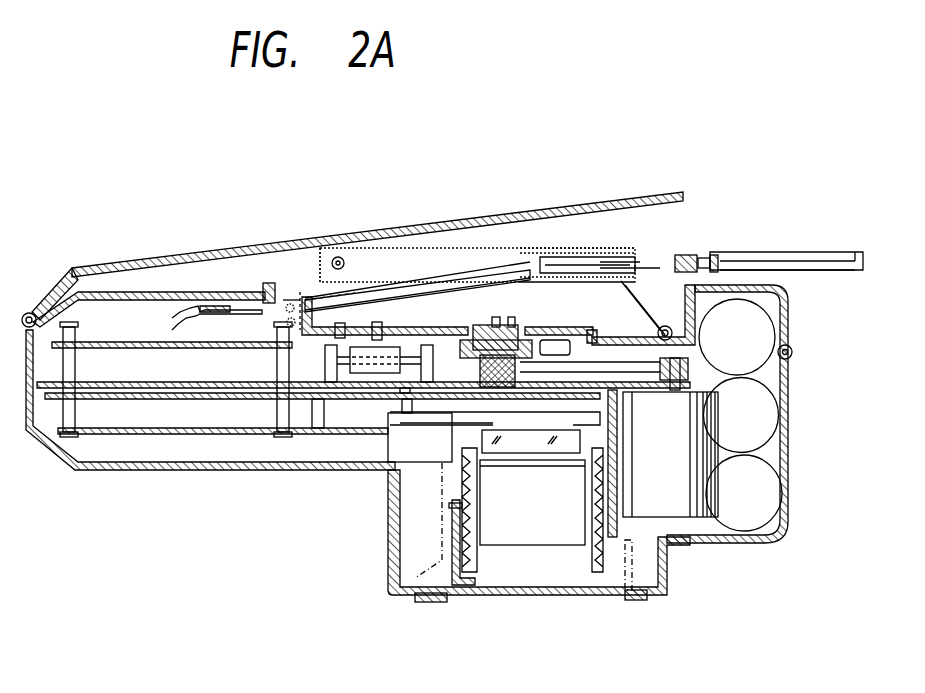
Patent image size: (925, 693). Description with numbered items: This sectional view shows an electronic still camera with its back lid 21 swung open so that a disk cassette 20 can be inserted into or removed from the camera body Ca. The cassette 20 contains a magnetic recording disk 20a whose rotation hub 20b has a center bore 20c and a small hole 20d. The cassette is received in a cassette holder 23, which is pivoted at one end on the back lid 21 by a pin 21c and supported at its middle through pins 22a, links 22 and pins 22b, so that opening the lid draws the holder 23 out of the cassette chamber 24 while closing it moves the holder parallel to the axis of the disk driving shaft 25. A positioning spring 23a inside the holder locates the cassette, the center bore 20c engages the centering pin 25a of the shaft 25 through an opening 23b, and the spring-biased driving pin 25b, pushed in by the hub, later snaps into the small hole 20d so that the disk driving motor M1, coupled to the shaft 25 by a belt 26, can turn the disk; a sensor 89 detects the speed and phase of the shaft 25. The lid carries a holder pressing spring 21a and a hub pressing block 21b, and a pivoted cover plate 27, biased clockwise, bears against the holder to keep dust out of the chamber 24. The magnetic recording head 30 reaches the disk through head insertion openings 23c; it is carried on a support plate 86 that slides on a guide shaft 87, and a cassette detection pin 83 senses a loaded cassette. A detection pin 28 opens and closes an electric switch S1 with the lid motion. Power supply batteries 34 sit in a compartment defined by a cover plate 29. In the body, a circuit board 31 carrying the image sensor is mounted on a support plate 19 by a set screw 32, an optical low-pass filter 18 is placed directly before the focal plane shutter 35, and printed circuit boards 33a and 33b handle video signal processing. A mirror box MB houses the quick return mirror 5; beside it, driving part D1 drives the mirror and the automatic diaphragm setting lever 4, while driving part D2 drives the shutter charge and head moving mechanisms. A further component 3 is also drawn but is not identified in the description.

The lower case 3 is at (630, 597).
The automatic diaphragm setting lever 4 is at (470, 585).
The quick return mirror 5 is at (560, 537).
The optical low-pass filter 18 is at (525, 440).
The support plate 19 is at (96, 399).
The disk cassette 20 is at (865, 253).
The magnetic recording disk 20a is at (840, 252).
The rotation hub 20b is at (707, 253).
The center bore 20c is at (713, 252).
The small hole 20d is at (716, 260).
The back lid 21 is at (683, 196).
The holder pressing spring 21a is at (595, 270).
The hub pressing block 21b is at (515, 285).
The pin 21c is at (325, 247).
The links 22 is at (405, 305).
The pins 22a is at (528, 327).
The pins 22b is at (290, 330).
The cassette holder 23 is at (657, 277).
The positioning spring 23a is at (410, 240).
The opening 23b is at (545, 340).
The head insertion openings 23c is at (333, 247).
The cassette chamber 24 is at (613, 270).
The disk driving shaft 25 is at (480, 330).
The centering pin 25a is at (493, 320).
The driving pin 25b is at (510, 320).
The belt 26 is at (662, 348).
The cover plate 27 is at (683, 280).
The detection pin 28 is at (268, 283).
The cover plate 29 is at (787, 303).
The magnetic recording head 30 is at (350, 345).
The circuit board 31 is at (217, 400).
The set screw 32 is at (290, 434).
The printed electronic circuit board 33a is at (126, 399).
The printed electronic circuit board 33b is at (162, 348).
The power supply batteries 34 is at (762, 333).
The focal plane shutter 35 is at (390, 440).
The cassette detection pin 83 is at (292, 300).
The support plate 86 is at (312, 292).
The guide shaft 87 is at (378, 322).
The sensor 89 is at (608, 277).
The electric switch S1 is at (199, 318).
The disk driving motor M1 is at (700, 495).
The mirror box MB is at (498, 560).
The camera body Ca is at (442, 543).
The driving part D1 is at (415, 595).
The driving part D2 is at (660, 590).